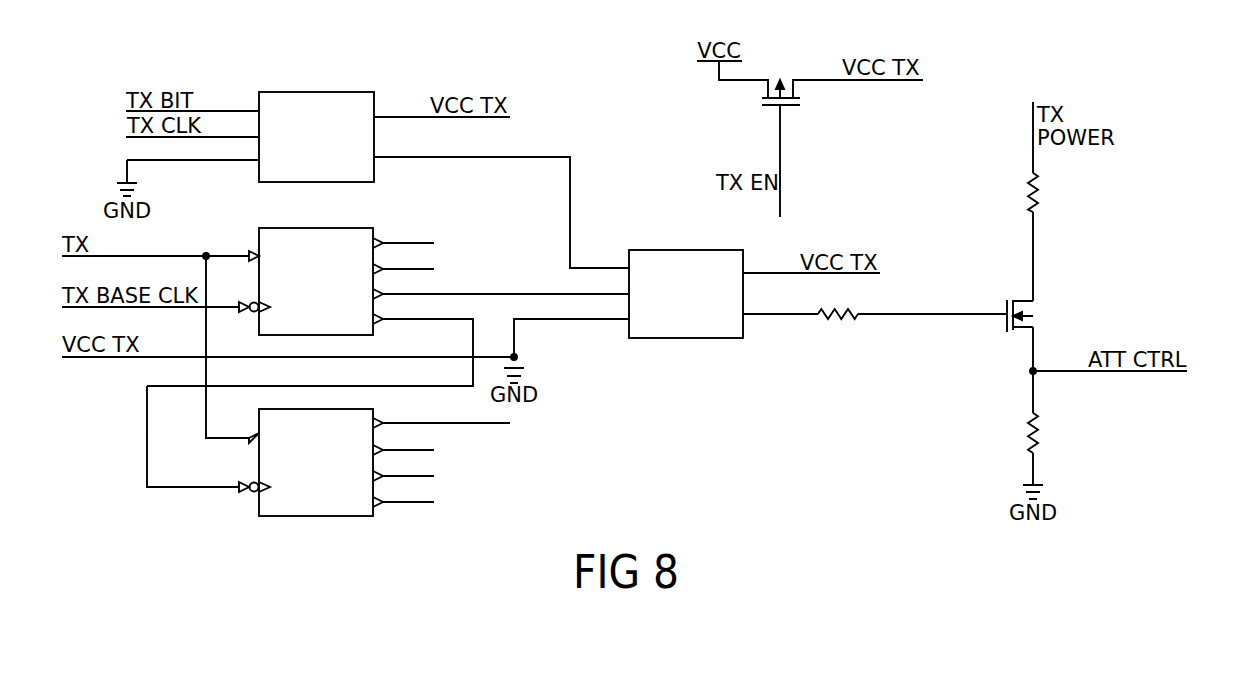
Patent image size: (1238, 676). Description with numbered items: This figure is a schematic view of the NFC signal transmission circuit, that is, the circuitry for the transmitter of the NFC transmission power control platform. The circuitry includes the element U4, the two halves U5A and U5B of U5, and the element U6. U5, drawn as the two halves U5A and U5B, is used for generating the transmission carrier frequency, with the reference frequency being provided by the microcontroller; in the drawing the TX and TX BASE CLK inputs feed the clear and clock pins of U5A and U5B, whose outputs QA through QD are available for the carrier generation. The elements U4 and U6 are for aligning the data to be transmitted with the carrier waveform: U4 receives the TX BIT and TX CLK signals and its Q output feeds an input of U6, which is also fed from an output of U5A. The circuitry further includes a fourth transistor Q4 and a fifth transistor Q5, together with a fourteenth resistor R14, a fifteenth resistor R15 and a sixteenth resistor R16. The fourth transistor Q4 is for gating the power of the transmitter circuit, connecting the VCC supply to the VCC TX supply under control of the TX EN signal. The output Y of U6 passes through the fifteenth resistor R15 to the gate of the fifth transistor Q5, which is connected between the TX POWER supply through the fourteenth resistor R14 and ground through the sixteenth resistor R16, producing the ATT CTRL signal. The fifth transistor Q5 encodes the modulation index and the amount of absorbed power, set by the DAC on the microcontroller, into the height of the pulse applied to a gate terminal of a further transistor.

The element U4 is at (316, 125).
The element U5A is at (316, 269).
The element U5B is at (316, 475).
The element U6 is at (686, 282).
The fourth transistor Q4 is at (763, 98).
The fifth transistor Q5 is at (1038, 316).
The fourteenth resistor R14 is at (1009, 192).
The fifteenth resistor R15 is at (839, 301).
The sixteenth resistor R16 is at (1009, 433).